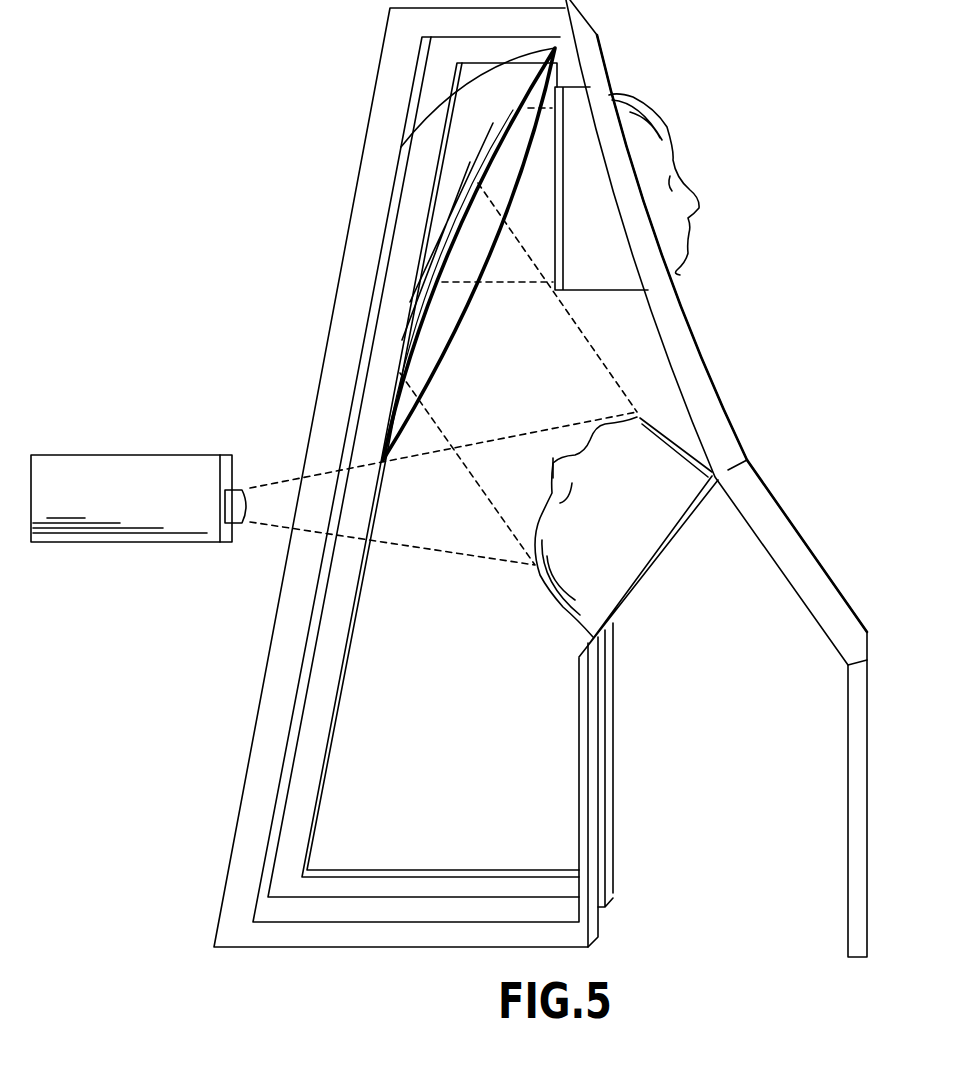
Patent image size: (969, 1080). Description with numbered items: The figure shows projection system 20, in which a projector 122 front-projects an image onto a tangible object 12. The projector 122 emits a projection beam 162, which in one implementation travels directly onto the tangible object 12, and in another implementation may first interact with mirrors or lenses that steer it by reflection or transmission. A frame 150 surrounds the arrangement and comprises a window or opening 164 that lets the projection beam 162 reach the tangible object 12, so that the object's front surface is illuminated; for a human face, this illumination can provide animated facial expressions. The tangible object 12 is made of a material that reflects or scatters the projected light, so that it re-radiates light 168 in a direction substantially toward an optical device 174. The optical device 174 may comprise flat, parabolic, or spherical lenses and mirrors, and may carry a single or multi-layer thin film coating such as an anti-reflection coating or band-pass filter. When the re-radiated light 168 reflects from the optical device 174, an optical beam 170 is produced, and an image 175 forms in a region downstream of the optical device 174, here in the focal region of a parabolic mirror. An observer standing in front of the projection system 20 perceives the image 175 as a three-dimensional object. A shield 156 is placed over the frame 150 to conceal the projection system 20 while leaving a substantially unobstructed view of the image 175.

The projection system 20 is at (757, 96).
The tangible object 12 is at (560, 606).
The projector 122 is at (134, 455).
The frame 150 is at (263, 681).
The shield 156 is at (818, 583).
The projection beam 162 is at (443, 518).
The window or opening 164 is at (354, 500).
The light 168 is at (533, 398).
The optical beam 170 is at (528, 219).
The optical device 174 is at (448, 177).
The image 175 is at (668, 126).